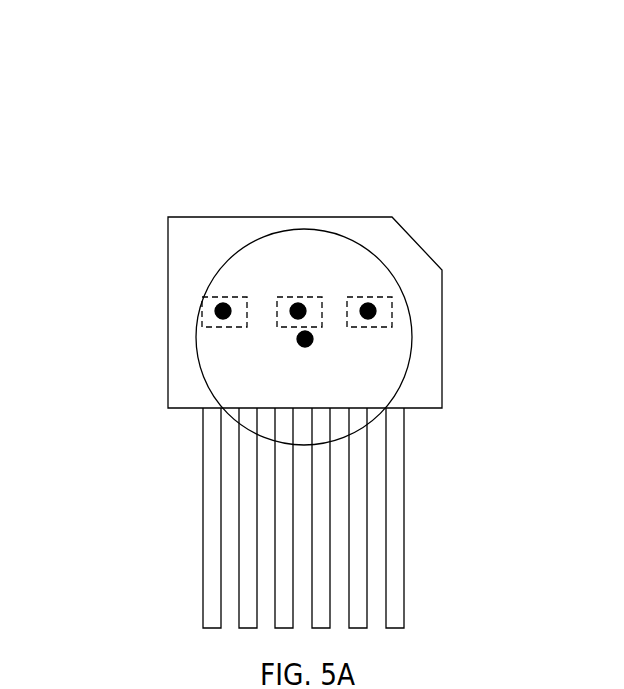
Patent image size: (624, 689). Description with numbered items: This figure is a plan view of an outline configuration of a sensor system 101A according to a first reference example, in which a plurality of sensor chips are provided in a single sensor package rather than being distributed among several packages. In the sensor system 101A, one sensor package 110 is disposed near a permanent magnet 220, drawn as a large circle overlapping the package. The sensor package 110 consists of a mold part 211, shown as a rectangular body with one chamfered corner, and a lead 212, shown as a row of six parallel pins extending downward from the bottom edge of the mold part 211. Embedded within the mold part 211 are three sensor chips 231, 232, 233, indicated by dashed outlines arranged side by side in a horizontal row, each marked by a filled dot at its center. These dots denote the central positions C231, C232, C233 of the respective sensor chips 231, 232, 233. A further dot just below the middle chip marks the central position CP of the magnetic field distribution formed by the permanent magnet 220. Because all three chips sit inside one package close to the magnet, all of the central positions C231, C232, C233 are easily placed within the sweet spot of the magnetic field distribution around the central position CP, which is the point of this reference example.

The sensor system 101A is at (461, 121).
The sensor package 110 is at (131, 212).
The mold part 211 is at (427, 312).
The lead 212 is at (393, 513).
The permanent magnet 220 is at (383, 262).
The sensor chip 231 is at (220, 303).
The sensor chip 232 is at (298, 303).
The sensor chip 233 is at (367, 303).
The central position C231 is at (222, 312).
The central position C232 is at (297, 313).
The central position C233 is at (368, 311).
The central position CP is at (305, 339).